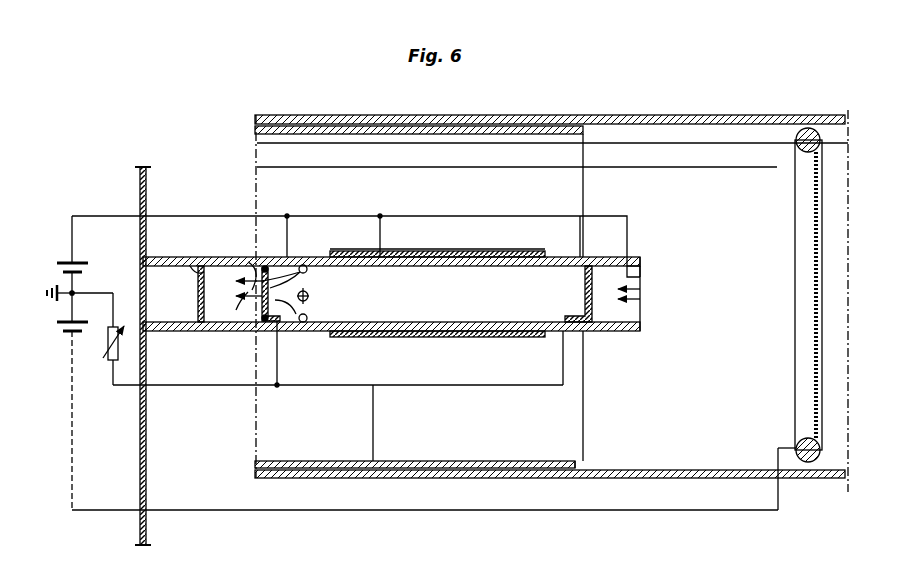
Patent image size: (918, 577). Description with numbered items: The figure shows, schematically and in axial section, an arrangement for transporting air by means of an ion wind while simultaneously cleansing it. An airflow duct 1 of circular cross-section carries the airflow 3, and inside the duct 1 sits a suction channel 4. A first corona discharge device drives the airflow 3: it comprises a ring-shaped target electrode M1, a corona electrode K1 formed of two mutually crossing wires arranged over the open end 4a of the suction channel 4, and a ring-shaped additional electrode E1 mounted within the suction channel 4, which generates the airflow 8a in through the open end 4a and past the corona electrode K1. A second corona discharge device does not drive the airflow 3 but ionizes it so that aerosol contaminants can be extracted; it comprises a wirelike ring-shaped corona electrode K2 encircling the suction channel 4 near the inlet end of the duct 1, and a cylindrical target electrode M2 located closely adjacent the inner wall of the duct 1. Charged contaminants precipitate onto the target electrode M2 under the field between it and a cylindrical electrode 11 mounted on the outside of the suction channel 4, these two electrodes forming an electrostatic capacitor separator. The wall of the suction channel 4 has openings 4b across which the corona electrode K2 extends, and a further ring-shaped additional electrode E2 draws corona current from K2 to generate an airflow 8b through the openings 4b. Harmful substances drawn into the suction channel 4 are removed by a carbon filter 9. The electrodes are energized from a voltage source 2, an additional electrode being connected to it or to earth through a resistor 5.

The airflow duct 1 is at (660, 124).
The voltage source 2 is at (90, 266).
The airflow 3 is at (312, 186).
The suction channel 4 is at (563, 257).
The open end of the suction channel 4a is at (640, 260).
The openings 4b is at (305, 263).
The resistor 5 is at (106, 360).
The airflow through the open end 8a is at (640, 345).
The airflow through the openings 8b is at (248, 262).
The carbon filter 9 is at (194, 265).
The cylindrical electrode 11 is at (432, 253).
The ring-shaped additional electrode E1 is at (596, 257).
The further ring-shaped additional electrode E2 is at (262, 316).
The corona electrode K1 is at (640, 272).
The ring-shaped corona electrode K2 is at (300, 331).
The ring-shaped target electrode M1 is at (795, 188).
The cylindrical target electrode M2 is at (355, 462).